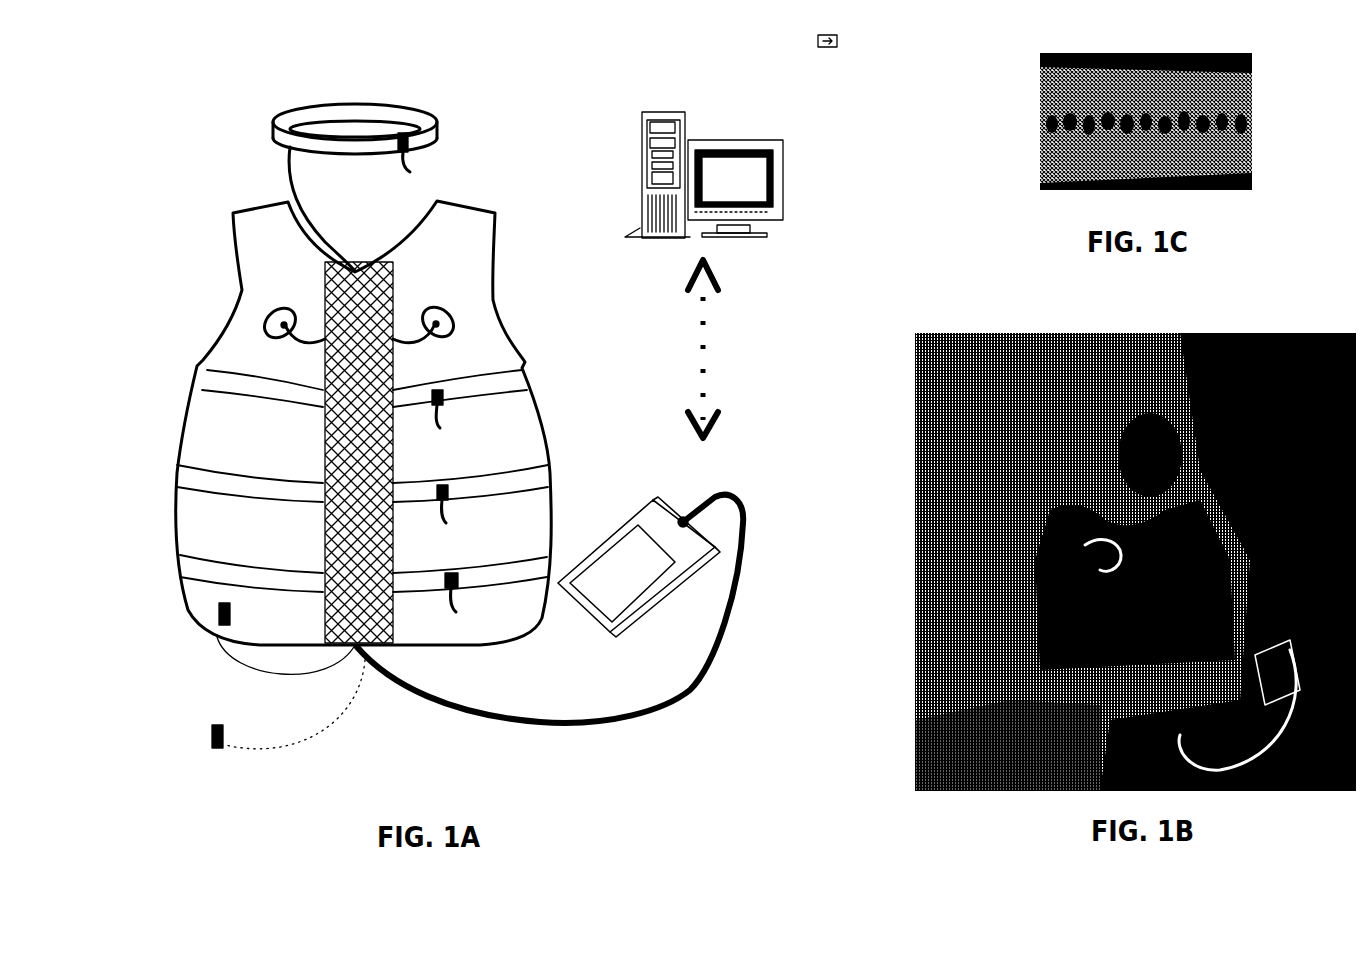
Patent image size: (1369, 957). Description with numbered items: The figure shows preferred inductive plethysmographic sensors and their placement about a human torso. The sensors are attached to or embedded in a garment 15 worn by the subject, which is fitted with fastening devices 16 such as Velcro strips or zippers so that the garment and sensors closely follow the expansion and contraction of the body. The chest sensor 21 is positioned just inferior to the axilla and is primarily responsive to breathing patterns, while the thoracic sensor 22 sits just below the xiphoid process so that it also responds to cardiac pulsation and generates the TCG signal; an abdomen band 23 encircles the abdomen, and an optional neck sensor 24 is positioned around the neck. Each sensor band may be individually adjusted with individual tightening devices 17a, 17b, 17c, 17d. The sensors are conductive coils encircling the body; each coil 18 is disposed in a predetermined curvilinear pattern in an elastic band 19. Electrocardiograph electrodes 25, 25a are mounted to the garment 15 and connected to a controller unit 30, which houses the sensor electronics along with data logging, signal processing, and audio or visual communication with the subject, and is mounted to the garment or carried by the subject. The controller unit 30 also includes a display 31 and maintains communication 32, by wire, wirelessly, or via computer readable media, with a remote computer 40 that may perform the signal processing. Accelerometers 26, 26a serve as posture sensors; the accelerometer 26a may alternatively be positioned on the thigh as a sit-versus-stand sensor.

In FIG. 1B, the garment 15 is at (1044, 486).
In FIG. 1A, the fastening devices 16 is at (323, 435).
In FIG. 1A, the individual tightening device 17a is at (409, 160).
In FIG. 1A, the individual tightening device 17b is at (445, 423).
In FIG. 1A, the individual tightening device 17c is at (452, 514).
In FIG. 1A, the individual tightening device 17d is at (460, 600).
In FIG. 1C, the coil 18 is at (1046, 131).
In FIG. 1C, the elastic band 19 is at (1050, 67).
In FIG. 1A, the chest sensor 21 is at (195, 373).
In FIG. 1A, the thoracic sensor 22 is at (173, 474).
In FIG. 1A, the abdomen band 23 is at (179, 569).
In FIG. 1A, the neck sensor 24 is at (274, 142).
In FIG. 1A, the electrocardiograph electrode 25 is at (284, 323).
In FIG. 1A, the electrocardiograph electrode 25a is at (436, 322).
In FIG. 1A, the accelerometer 26 is at (233, 622).
In FIG. 1A, the accelerometer 26a is at (226, 742).
In FIG. 1A, the controller unit 30 is at (666, 499).
In FIG. 1B, the controller unit 30 is at (1267, 674).
In FIG. 1A, the display 31 is at (637, 552).
In FIG. 1A, the communication 32 is at (685, 316).
In FIG. 1A, the remote computer 40 is at (638, 110).